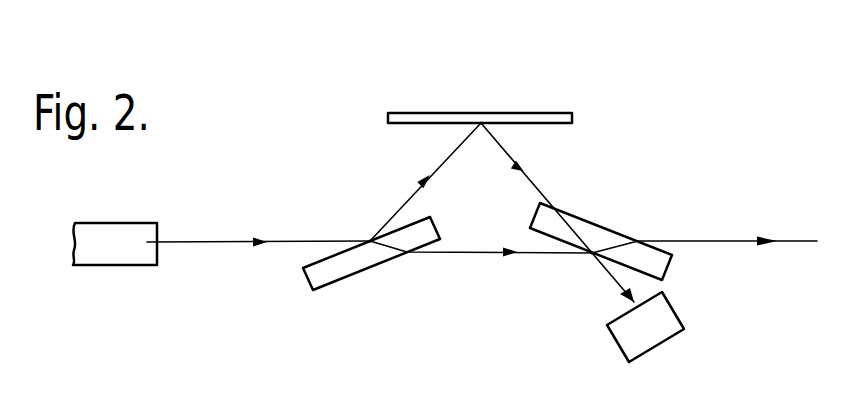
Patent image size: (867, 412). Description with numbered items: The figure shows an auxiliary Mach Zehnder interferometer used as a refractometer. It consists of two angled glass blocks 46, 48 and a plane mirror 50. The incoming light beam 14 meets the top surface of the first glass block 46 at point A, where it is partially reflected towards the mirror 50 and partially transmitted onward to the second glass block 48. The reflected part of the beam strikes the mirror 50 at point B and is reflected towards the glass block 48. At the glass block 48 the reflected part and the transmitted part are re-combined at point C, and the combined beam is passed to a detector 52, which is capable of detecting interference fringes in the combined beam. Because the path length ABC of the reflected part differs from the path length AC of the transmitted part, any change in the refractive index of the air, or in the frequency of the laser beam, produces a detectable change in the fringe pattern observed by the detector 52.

The incoming light beam 14 is at (200, 242).
The angled glass block 46 is at (310, 278).
The angled glass block 48 is at (610, 238).
The plane mirror 50 is at (549, 116).
The detector 52 is at (670, 316).
The point A is at (368, 238).
The point B is at (481, 128).
The point C is at (588, 258).